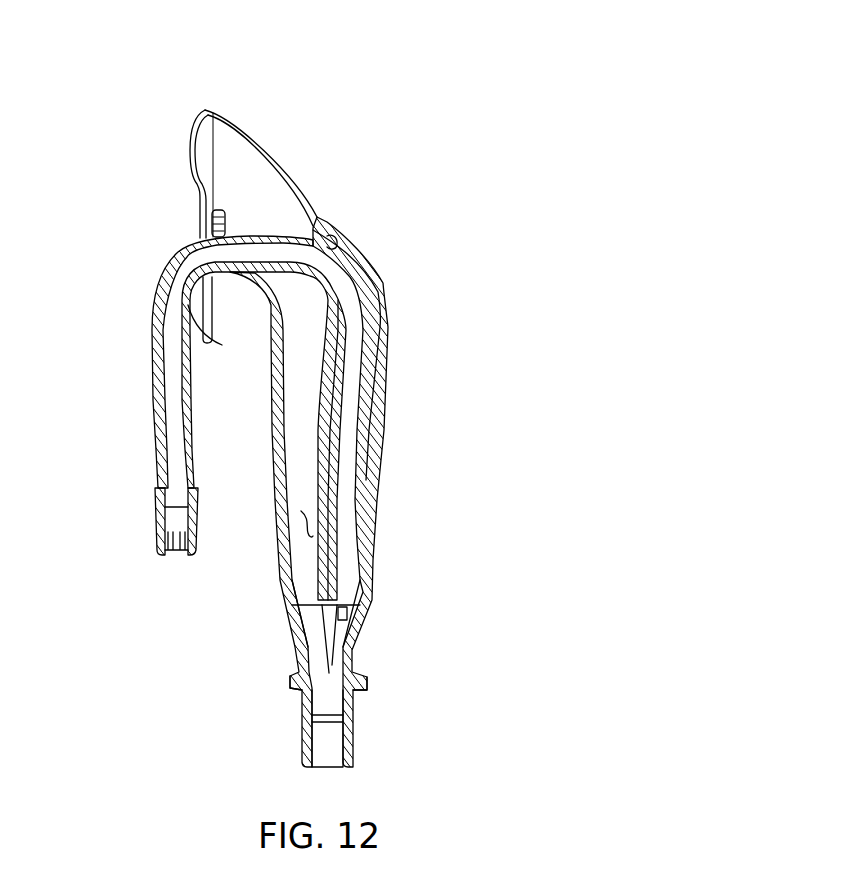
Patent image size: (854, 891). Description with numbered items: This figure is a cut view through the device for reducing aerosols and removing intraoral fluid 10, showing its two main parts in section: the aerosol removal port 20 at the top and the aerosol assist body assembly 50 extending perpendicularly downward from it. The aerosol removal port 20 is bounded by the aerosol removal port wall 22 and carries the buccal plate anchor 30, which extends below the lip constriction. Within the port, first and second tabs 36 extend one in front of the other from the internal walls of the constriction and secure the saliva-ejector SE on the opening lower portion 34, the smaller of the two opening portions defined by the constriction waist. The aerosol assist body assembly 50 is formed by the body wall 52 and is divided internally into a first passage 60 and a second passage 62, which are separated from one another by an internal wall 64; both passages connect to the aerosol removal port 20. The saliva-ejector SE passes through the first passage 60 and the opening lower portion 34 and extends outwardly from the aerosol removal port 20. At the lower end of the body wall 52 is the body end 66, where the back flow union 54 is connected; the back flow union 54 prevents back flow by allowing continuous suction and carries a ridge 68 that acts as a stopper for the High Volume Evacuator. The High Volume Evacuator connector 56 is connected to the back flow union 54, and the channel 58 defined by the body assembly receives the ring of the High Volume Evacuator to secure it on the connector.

The device for reducing aerosols and removing intraoral fluid 10 is at (609, 147).
The aerosol removal port 20 is at (320, 98).
The aerosol removal port wall 22 is at (287, 163).
The first and second tabs 36 is at (225, 220).
The buccal plate anchor 30 is at (211, 328).
The opening lower portion 34 is at (257, 317).
The aerosol assist body assembly 50 is at (493, 338).
The body wall 52 is at (367, 547).
The back flow union 54 is at (362, 645).
The High Volume Evacuator connector 56 is at (347, 753).
The channel 58 is at (347, 717).
The first passage 60 is at (333, 243).
The second passage 62 is at (303, 523).
The internal wall 64 is at (325, 502).
The body end 66 is at (308, 608).
The ridge 68 is at (365, 680).
The saliva-ejector SE is at (157, 383).